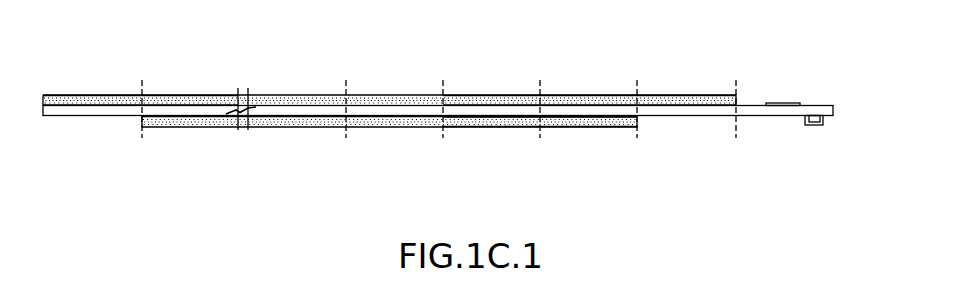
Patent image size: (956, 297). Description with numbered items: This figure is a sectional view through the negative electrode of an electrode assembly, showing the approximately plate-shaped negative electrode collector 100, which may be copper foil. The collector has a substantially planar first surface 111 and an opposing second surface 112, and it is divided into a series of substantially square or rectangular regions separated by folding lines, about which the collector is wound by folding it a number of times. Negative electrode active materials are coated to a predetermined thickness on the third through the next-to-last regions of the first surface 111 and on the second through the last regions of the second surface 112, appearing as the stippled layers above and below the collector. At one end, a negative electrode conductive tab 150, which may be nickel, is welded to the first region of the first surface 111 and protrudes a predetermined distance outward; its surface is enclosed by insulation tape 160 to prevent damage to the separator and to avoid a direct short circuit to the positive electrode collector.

The negative electrode collector 100 is at (475, 108).
The first surface 111 is at (782, 116).
The second surface 112 is at (789, 104).
The negative electrode conductive tab 150 is at (824, 120).
The insulation tape 160 is at (812, 125).